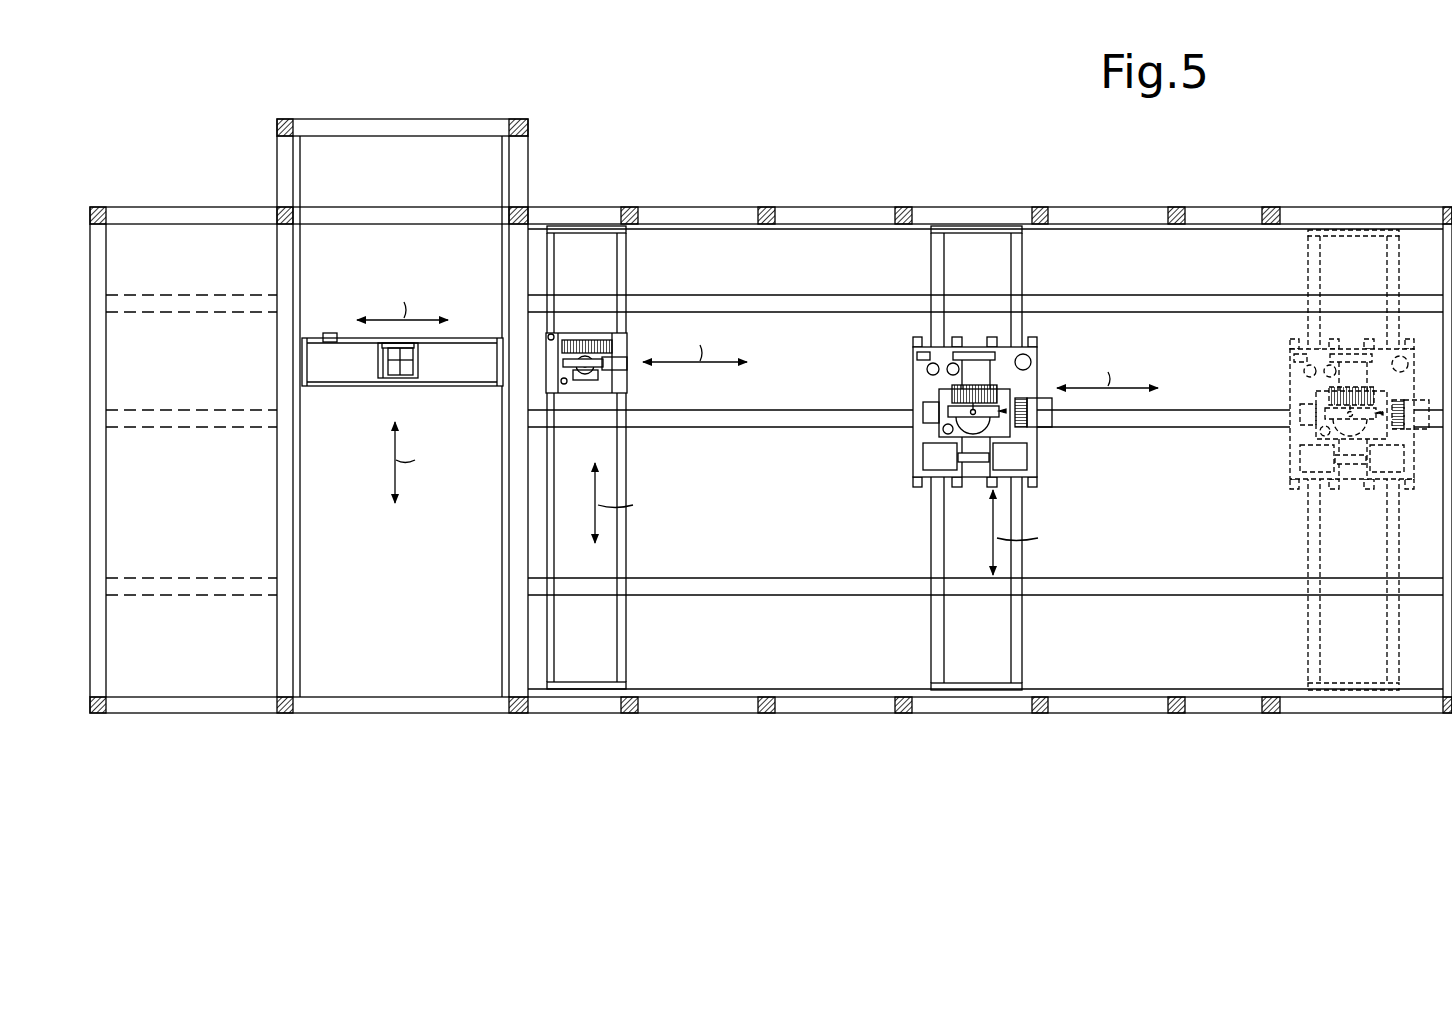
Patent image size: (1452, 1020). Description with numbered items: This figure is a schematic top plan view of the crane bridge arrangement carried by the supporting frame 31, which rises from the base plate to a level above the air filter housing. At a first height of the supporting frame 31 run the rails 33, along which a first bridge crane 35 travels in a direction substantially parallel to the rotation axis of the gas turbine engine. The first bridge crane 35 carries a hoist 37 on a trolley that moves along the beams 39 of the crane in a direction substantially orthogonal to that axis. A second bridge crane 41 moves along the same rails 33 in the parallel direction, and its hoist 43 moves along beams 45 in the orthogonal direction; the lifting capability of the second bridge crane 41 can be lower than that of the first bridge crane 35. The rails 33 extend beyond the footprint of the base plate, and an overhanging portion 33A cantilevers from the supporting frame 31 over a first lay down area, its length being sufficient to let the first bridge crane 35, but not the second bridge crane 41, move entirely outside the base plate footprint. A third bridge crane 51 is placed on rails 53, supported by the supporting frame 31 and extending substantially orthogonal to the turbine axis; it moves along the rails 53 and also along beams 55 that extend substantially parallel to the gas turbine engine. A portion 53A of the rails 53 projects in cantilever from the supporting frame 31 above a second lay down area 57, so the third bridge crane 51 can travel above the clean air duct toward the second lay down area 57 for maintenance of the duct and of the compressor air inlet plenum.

The supporting frame 31 is at (771, 462).
The rails 33 is at (1098, 227).
The overhanging portion of the rails 33A is at (1416, 693).
The first bridge crane 35 is at (1140, 458).
The hoist 37 is at (945, 397).
The beams 39 is at (937, 627).
The second bridge crane 41 is at (646, 457).
The hoist 43 is at (583, 343).
The beams 45 is at (550, 625).
The third bridge crane 51 is at (428, 366).
The rails 53 is at (446, 372).
The projecting portion of the rails 53A is at (545, 112).
The beams 55 is at (352, 340).
The second lay down area 57 is at (383, 160).